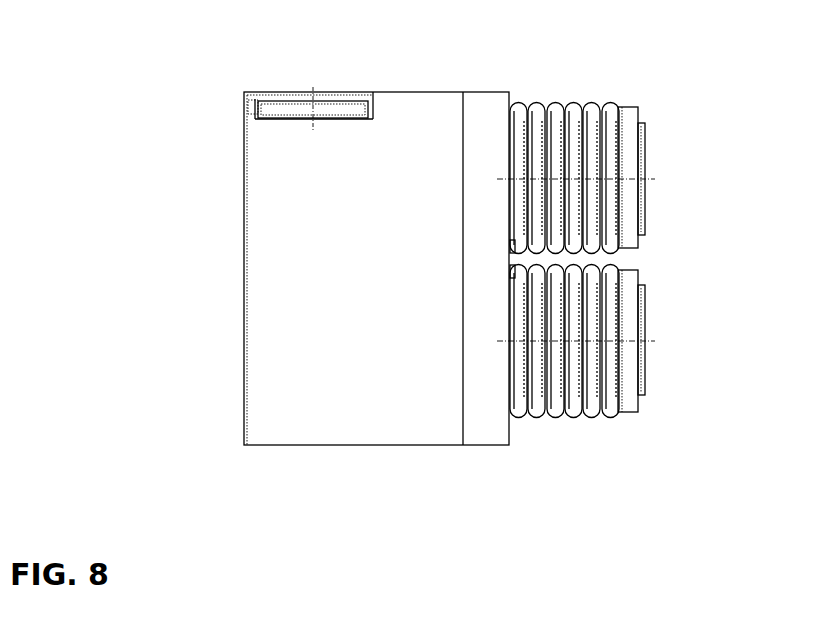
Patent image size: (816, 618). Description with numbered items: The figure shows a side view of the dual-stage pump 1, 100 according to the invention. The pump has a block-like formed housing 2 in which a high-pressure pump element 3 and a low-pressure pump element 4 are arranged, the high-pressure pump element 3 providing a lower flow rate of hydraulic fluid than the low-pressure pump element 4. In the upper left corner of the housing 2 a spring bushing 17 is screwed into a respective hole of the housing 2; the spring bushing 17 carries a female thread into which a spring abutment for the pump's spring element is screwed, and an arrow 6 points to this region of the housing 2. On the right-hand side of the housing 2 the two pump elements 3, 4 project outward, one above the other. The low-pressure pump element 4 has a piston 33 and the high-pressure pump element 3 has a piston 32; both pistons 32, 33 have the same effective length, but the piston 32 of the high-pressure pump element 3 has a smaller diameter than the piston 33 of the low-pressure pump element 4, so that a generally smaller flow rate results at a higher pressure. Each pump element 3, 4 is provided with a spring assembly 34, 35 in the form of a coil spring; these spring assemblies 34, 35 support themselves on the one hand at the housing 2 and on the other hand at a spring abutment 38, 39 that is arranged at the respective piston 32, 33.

The dual-stage pump 1 is at (182, 184).
The dual-stage pump 100 is at (404, 264).
The housing 2 is at (418, 113).
The spring bushing 17 is at (332, 108).
The inlet opening 6 is at (258, 107).
The low-pressure pump element 4 is at (648, 190).
The high-pressure pump element 3 is at (648, 362).
The spring assembly 35 is at (551, 103).
The spring assembly 34 is at (530, 412).
The spring abutment 39 is at (627, 118).
The spring abutment 38 is at (622, 405).
The piston 33 is at (646, 150).
The piston 32 is at (646, 313).